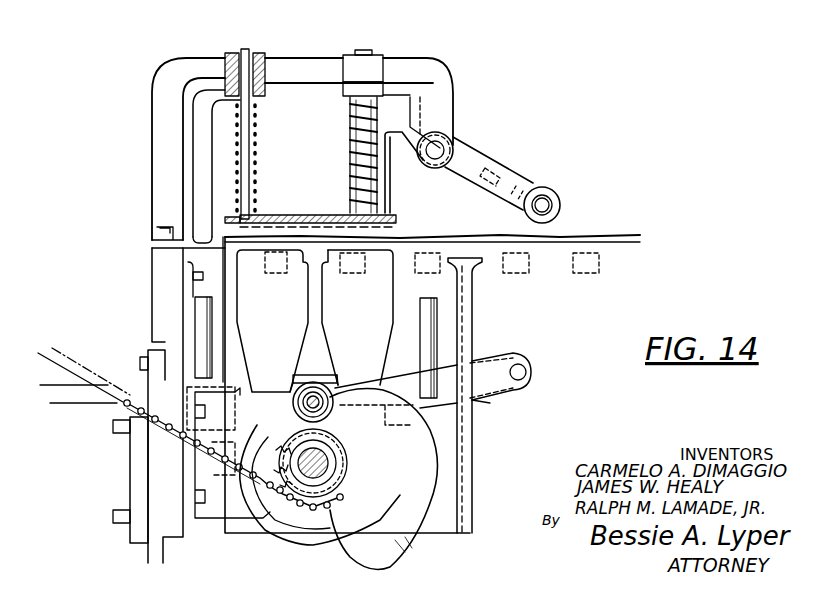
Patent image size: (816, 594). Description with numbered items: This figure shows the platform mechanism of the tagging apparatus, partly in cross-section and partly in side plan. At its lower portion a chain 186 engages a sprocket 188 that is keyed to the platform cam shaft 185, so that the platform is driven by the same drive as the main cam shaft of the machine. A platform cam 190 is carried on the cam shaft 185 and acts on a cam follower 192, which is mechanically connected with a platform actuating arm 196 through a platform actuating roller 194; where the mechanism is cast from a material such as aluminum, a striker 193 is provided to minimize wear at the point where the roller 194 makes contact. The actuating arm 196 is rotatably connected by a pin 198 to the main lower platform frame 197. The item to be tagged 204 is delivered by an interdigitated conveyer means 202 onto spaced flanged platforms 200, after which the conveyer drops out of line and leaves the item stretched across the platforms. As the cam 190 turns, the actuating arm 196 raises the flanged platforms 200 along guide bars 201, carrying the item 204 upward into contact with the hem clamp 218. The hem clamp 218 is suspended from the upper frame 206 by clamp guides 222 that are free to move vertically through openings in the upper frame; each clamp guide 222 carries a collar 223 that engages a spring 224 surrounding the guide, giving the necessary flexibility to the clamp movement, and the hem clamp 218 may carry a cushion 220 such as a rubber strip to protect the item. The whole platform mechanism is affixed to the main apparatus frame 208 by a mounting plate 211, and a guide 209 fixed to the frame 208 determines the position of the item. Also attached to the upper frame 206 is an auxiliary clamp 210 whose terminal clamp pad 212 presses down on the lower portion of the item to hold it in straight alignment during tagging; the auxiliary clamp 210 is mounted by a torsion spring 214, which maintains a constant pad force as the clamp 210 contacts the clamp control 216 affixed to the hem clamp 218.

The platform cam shaft 185 is at (330, 461).
The chain 186 is at (93, 375).
The sprocket 188 is at (255, 480).
The platform cam 190 is at (407, 560).
The cam follower 192 is at (320, 390).
The striker 193 is at (313, 364).
The platform actuating roller 194 is at (288, 420).
The platform actuating arm 196 is at (480, 355).
The main lower platform frame 197 is at (490, 405).
The pin 198 is at (527, 367).
The flanged platform 200 is at (240, 317).
The guide bar 201 is at (200, 330).
The interdigitated conveyer means 202 is at (276, 273).
The item to be tagged 204 is at (590, 237).
The upper frame 206 is at (163, 72).
The main apparatus frame 208 is at (160, 282).
The guide 209 is at (193, 257).
The auxiliary clamp 210 is at (505, 165).
The mounting plate 211 is at (150, 468).
The clamp pad 212 is at (556, 199).
The torsion spring 214 is at (413, 127).
The clamp control 216 is at (392, 195).
The hem clamp 218 is at (270, 216).
The cushion 220 is at (288, 216).
The clamp guide 222 is at (257, 137).
The collar 223 is at (268, 92).
The spring 224 is at (257, 173).